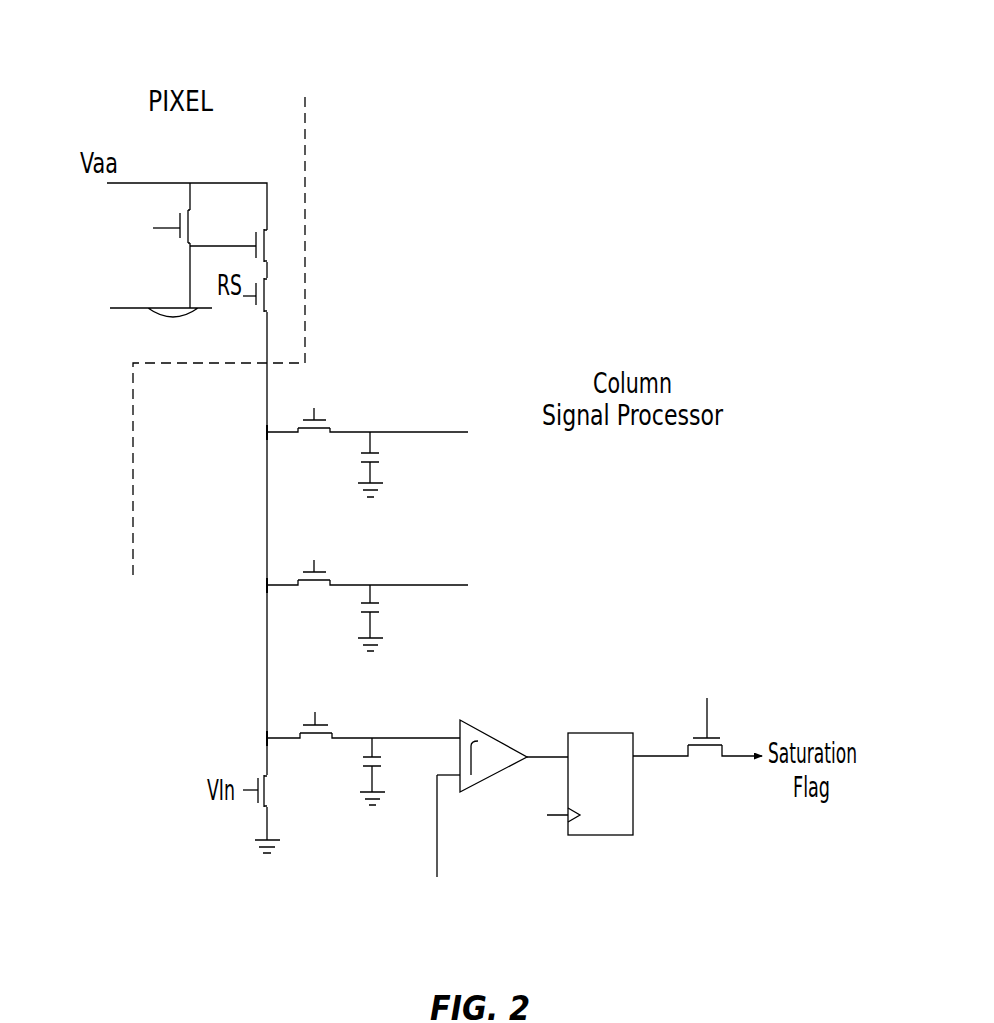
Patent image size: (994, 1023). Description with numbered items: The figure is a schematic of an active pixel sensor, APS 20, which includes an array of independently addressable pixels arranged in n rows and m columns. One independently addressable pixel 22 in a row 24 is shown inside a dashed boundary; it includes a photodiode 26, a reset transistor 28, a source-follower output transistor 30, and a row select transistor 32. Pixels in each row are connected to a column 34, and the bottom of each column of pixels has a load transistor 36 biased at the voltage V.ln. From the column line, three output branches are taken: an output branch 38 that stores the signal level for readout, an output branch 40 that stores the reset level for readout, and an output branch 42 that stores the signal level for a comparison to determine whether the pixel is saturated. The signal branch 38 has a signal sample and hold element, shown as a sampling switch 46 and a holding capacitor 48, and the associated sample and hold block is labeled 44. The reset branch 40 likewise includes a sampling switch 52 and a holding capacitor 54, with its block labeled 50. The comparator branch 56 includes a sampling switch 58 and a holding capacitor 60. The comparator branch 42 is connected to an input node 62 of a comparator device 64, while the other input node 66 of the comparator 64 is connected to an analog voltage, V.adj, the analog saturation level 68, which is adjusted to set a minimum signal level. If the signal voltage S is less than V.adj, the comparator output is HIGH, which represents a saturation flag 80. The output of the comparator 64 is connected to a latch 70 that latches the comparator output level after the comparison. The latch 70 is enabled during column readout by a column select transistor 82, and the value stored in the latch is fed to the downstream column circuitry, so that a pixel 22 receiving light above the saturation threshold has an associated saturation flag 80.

The APS 20 is at (497, 128).
The independently addressable pixel 22 is at (283, 88).
The row 24 is at (103, 228).
The photodiode 26 is at (137, 307).
The reset transistor 28 is at (180, 222).
The source-follower output transistor 30 is at (273, 243).
The row select transistor 32 is at (273, 297).
The column 34 is at (267, 864).
The load transistor 36 is at (258, 800).
The output branch 38 is at (255, 435).
The output branch 40 is at (255, 587).
The output branch 42 is at (260, 740).
The signal sample and hold circuit 44 is at (432, 398).
The sampling switch 46 is at (317, 437).
The holding capacitor 48 is at (378, 457).
The reset sample and hold circuit 50 is at (432, 550).
The sampling switch 52 is at (317, 588).
The holding capacitor 54 is at (378, 608).
The comparator branch 56 is at (430, 668).
The sampling switch 58 is at (318, 743).
The holding capacitor 60 is at (380, 767).
The input node 62 is at (458, 728).
The comparator device 64 is at (493, 750).
The input node 66 is at (458, 782).
The analog saturation level input V.adj 68 is at (478, 931).
The latch 70 is at (603, 795).
The saturation flag 80 is at (792, 697).
The column select transistor 82 is at (698, 733).